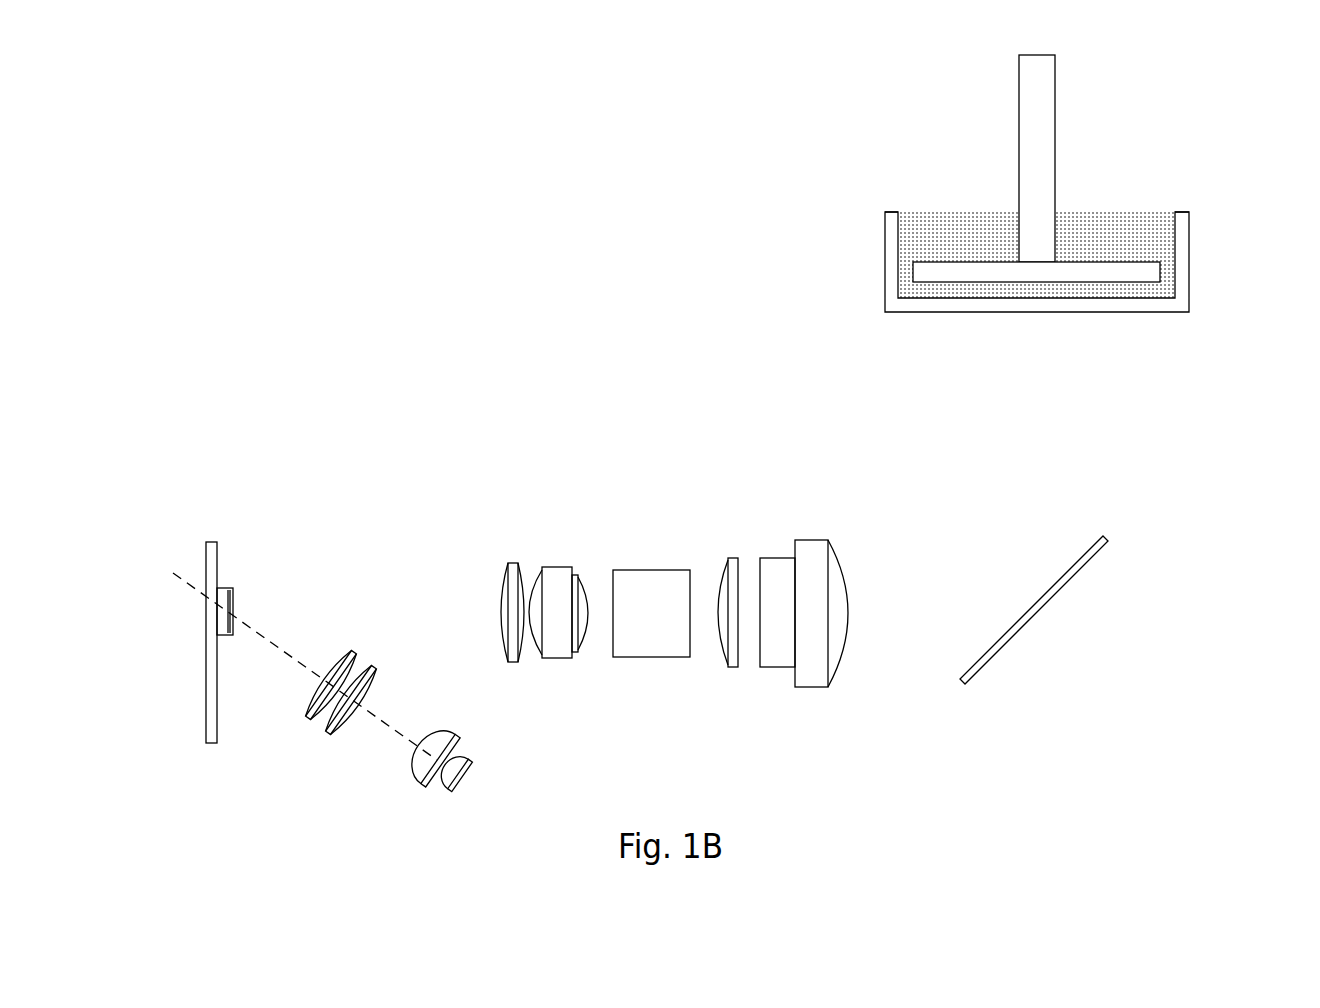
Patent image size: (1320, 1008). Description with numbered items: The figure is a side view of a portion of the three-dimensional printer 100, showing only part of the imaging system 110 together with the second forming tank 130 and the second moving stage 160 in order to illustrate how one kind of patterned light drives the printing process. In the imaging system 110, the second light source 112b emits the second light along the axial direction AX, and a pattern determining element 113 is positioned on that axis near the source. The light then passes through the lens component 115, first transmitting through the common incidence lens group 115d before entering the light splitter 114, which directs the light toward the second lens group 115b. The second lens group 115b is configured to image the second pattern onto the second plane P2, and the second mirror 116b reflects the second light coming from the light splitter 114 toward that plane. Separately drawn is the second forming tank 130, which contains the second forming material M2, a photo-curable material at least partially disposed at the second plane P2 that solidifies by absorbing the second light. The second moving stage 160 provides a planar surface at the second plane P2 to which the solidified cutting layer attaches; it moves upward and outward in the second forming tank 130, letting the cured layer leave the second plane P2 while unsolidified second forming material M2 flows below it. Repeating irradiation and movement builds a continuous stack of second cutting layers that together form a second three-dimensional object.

The three-dimensional printer 100 is at (292, 196).
The imaging system 110 is at (1160, 462).
The second light source 112b is at (470, 765).
The pattern determining element 113 is at (233, 592).
The light splitter 114 is at (650, 645).
The lens component 115 is at (810, 480).
The second lens group 115b is at (840, 528).
The common incidence lens group 115d is at (583, 528).
The second mirror 116b is at (1108, 537).
The second forming tank 130 is at (1180, 258).
The second moving stage 160 is at (1037, 115).
The axial direction AX is at (188, 581).
The second forming material M2 is at (1155, 237).
The second plane P2 is at (1122, 283).